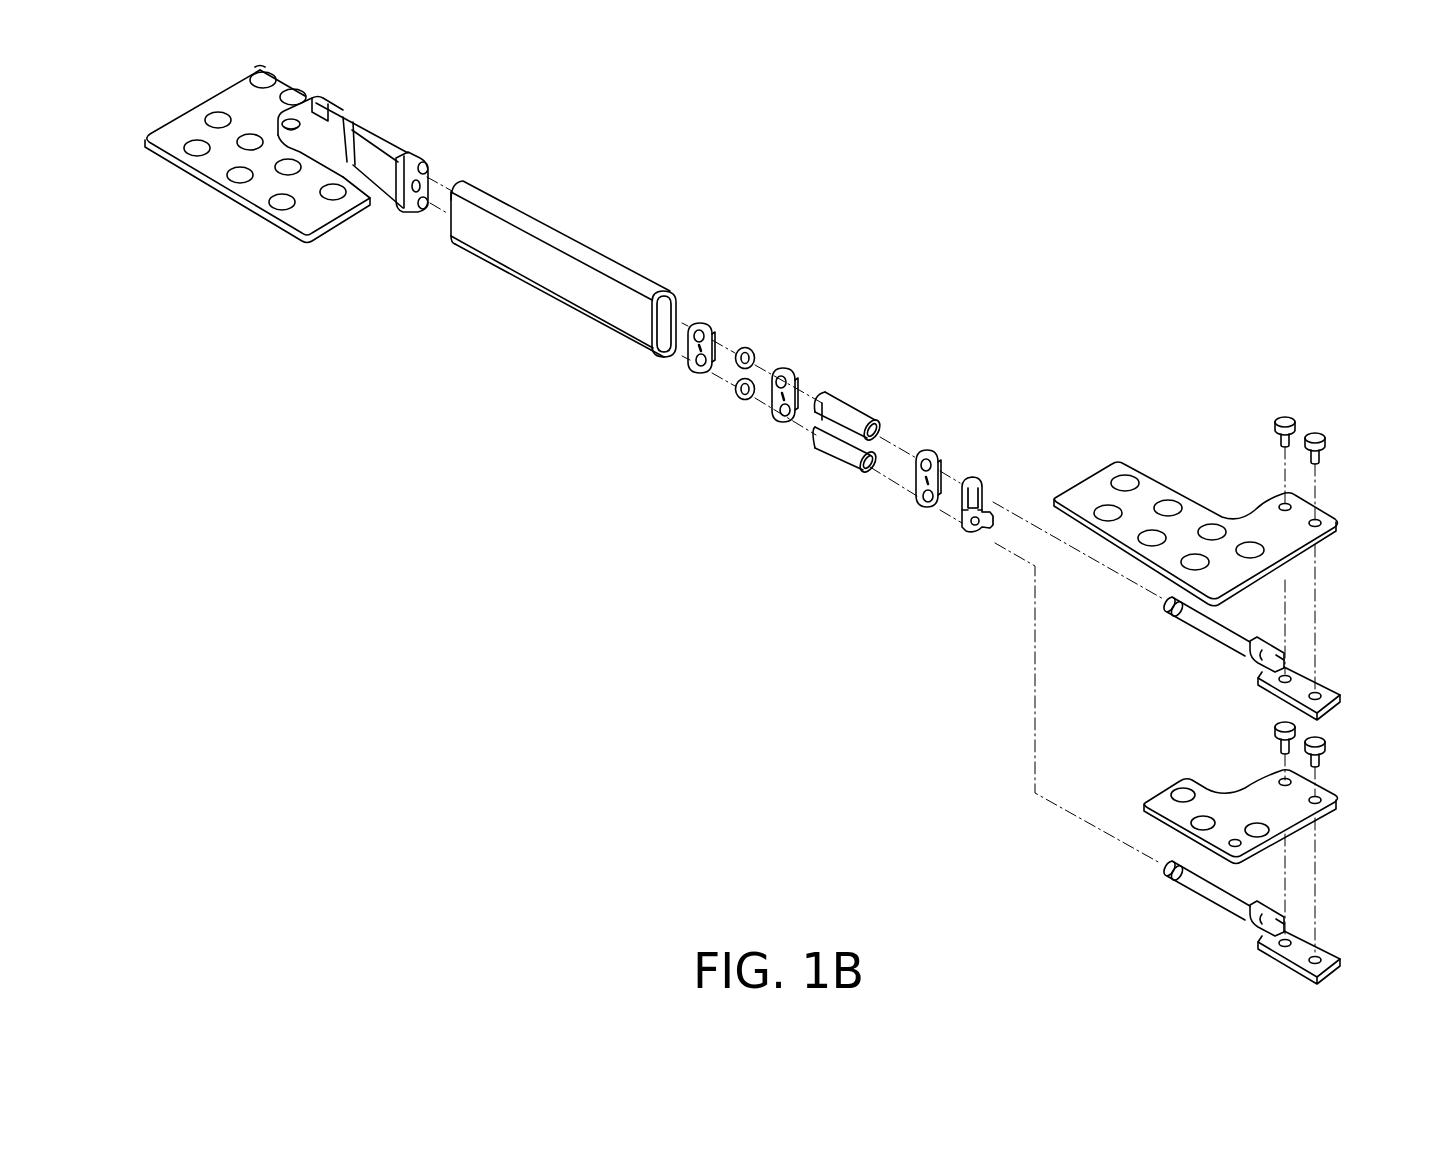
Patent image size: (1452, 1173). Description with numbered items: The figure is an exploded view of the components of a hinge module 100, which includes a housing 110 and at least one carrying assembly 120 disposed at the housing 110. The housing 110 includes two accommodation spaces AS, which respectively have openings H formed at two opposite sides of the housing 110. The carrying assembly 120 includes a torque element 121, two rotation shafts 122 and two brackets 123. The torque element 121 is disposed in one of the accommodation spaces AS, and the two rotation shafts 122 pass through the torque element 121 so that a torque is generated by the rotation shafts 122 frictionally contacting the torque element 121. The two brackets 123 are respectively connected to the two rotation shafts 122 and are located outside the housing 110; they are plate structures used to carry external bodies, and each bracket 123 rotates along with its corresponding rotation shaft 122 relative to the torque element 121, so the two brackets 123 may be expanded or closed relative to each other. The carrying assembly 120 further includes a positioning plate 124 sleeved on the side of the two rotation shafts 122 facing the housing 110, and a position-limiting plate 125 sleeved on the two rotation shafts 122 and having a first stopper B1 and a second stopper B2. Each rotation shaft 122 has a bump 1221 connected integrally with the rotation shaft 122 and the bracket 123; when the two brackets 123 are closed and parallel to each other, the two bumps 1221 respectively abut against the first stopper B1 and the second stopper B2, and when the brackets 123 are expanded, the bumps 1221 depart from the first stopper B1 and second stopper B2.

The hinge module 100 is at (209, 904).
The housing 110 is at (538, 268).
The carrying assembly 120 is at (297, 218).
The torque element 121 is at (842, 452).
The rotation shaft 122 is at (1217, 633).
The bump 1221 is at (1258, 660).
The bracket 123 is at (1287, 536).
The positioning plate 124 is at (709, 326).
The position-limiting plate 125 is at (967, 518).
The accommodation space AS is at (668, 318).
The opening H is at (662, 366).
The first stopper B1 is at (974, 490).
The second stopper B2 is at (988, 517).